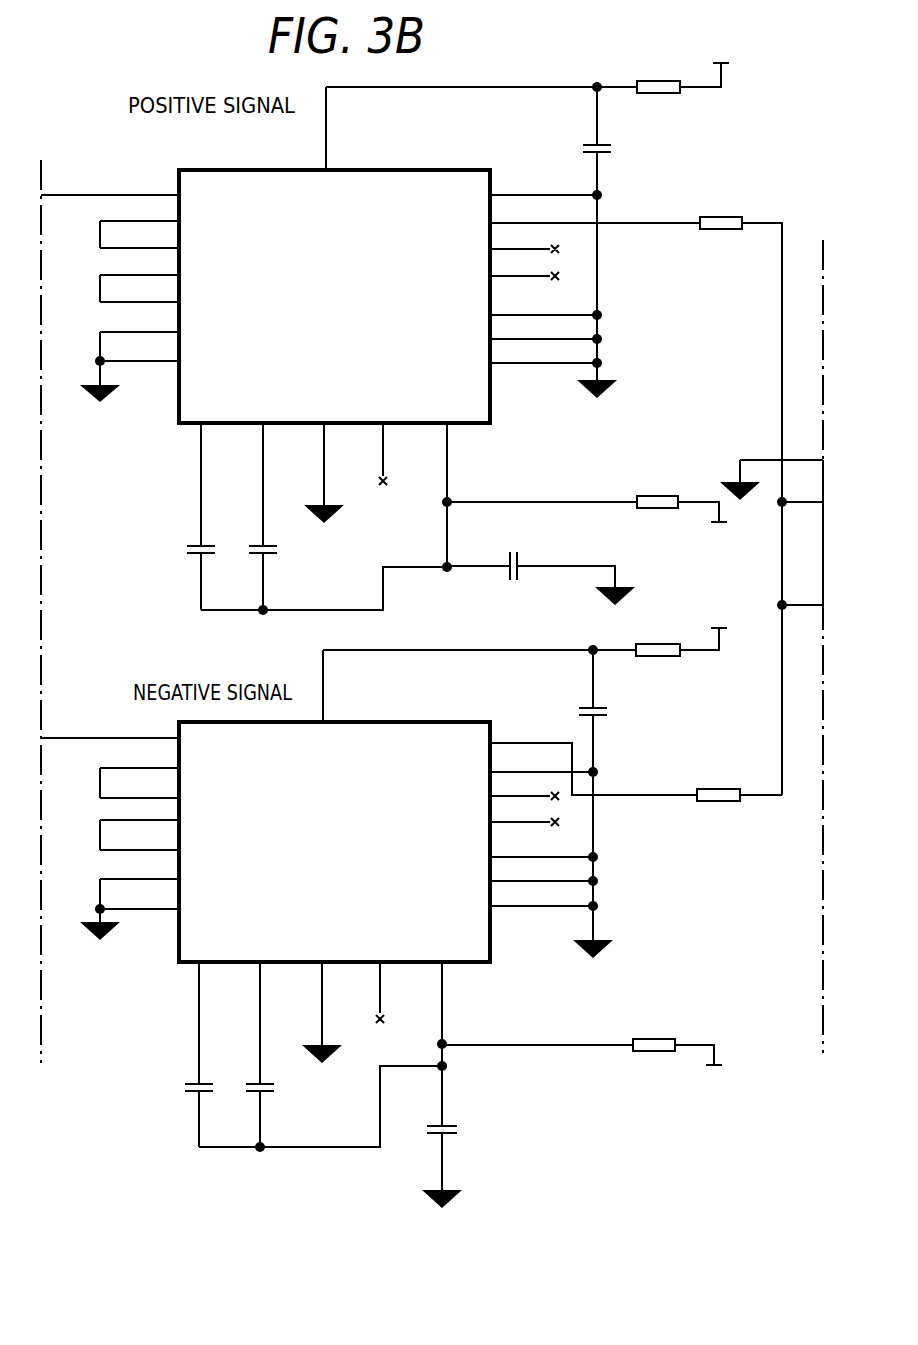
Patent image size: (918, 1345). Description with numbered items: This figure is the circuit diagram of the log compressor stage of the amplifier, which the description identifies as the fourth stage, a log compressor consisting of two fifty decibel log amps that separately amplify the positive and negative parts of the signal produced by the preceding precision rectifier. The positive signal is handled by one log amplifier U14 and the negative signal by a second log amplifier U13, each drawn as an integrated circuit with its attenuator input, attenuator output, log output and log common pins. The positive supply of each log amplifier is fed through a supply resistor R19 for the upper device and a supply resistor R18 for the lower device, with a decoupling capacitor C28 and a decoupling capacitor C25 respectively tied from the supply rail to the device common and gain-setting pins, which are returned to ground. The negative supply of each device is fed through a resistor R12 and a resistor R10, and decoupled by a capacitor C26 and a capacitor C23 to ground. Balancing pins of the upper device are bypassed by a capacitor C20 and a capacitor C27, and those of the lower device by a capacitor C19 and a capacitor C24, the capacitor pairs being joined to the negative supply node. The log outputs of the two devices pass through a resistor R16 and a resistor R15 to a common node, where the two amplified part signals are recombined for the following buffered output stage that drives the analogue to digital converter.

The AD640 logarithmic amplifier (positive signal) U14 is at (370, 327).
The AD640 logarithmic amplifier (negative signal) U13 is at (369, 888).
The 10 ohm supply resistor R19 is at (533, 82).
The 10 ohm supply resistor R18 is at (531, 646).
The 100 ohm resistor R16 is at (741, 494).
The 100 ohm resistor R15 is at (739, 801).
The 5 ohm supply resistor R12 is at (593, 513).
The 5 ohm supply resistor R10 is at (588, 1056).
The 0.1 uF decoupling capacitor C28 is at (623, 242).
The 0.1 uF decoupling capacitor C25 is at (619, 804).
The 0.1 uF capacitor C20 is at (174, 516).
The 0.1 uF capacitor C27 is at (291, 516).
The 0.1 uF capacitor C26 is at (541, 567).
The 0.1 uF capacitor C19 is at (173, 1054).
The 0.1 uF capacitor C24 is at (289, 1054).
The 0.1 uF capacitor C23 is at (467, 1159).